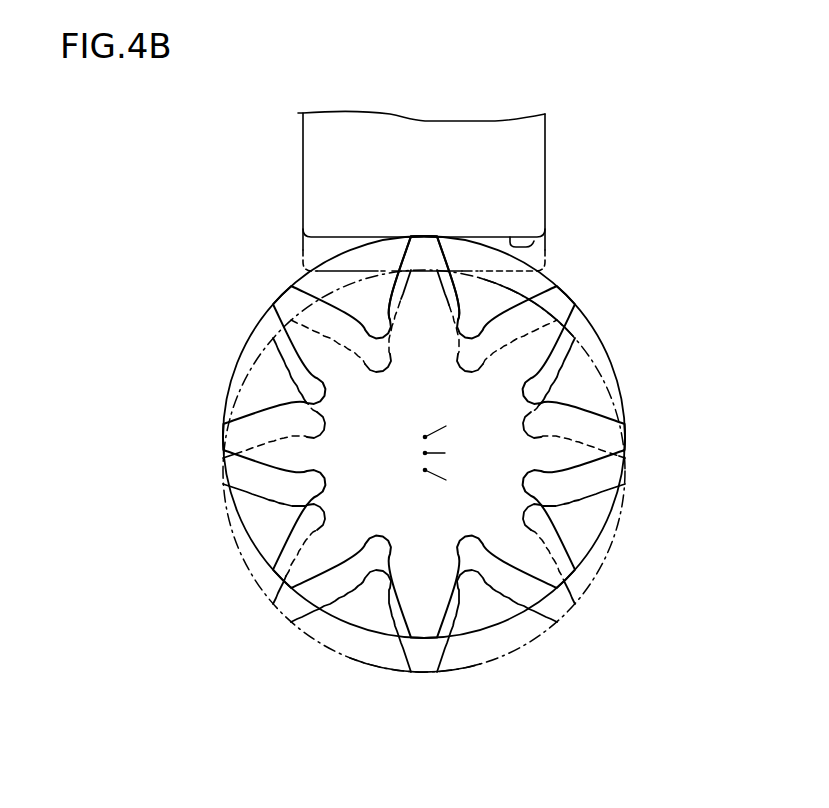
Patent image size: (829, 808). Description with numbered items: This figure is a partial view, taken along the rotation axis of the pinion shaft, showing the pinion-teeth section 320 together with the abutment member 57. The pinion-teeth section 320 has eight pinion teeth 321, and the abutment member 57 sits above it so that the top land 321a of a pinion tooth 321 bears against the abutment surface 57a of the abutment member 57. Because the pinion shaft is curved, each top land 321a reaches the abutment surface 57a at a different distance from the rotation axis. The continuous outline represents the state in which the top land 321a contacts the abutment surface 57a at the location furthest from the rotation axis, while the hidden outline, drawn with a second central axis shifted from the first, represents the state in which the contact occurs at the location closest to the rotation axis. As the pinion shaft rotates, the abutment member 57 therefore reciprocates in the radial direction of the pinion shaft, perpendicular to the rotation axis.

The abutment member 57 is at (545, 192).
The abutment surface 57a is at (534, 240).
The pinion-teeth section 320 is at (459, 433).
The pinion teeth 321 is at (400, 263).
The top land 321a is at (425, 237).